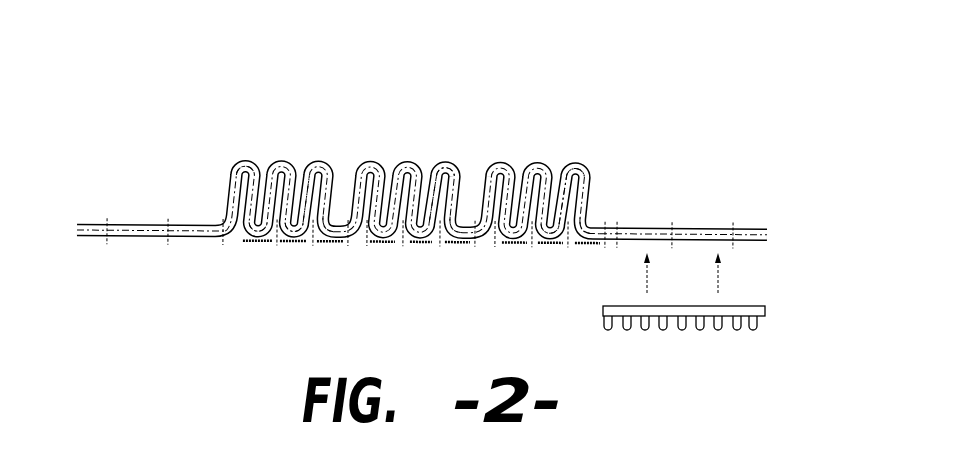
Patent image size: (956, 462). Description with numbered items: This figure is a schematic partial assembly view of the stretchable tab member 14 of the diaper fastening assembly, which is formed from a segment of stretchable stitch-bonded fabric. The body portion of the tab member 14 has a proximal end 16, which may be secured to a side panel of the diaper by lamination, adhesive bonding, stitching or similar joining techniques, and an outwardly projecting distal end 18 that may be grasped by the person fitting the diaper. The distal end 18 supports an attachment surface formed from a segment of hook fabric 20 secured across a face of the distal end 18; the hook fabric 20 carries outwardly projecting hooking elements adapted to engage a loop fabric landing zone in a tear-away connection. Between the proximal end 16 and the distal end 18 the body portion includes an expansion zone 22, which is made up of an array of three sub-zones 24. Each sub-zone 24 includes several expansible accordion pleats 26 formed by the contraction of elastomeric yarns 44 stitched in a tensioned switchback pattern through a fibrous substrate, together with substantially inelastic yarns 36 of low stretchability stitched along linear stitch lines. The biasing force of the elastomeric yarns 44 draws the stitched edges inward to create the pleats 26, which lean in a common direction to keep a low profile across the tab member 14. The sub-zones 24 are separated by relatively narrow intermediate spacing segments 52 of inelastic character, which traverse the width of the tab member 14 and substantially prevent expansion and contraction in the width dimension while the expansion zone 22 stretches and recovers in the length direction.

The stretchable tab member 14 is at (716, 77).
The proximal end 16 is at (150, 214).
The distal end 18 is at (703, 214).
The hook fabric 20 is at (755, 328).
The expansion zone 22 is at (598, 71).
The sub-zone 24 is at (342, 127).
The expansible accordion pleat 26 is at (227, 179).
The inelastic yarn 36 is at (312, 243).
The elastomeric yarn 44 is at (295, 241).
The intermediate spacing segment 52 is at (363, 243).